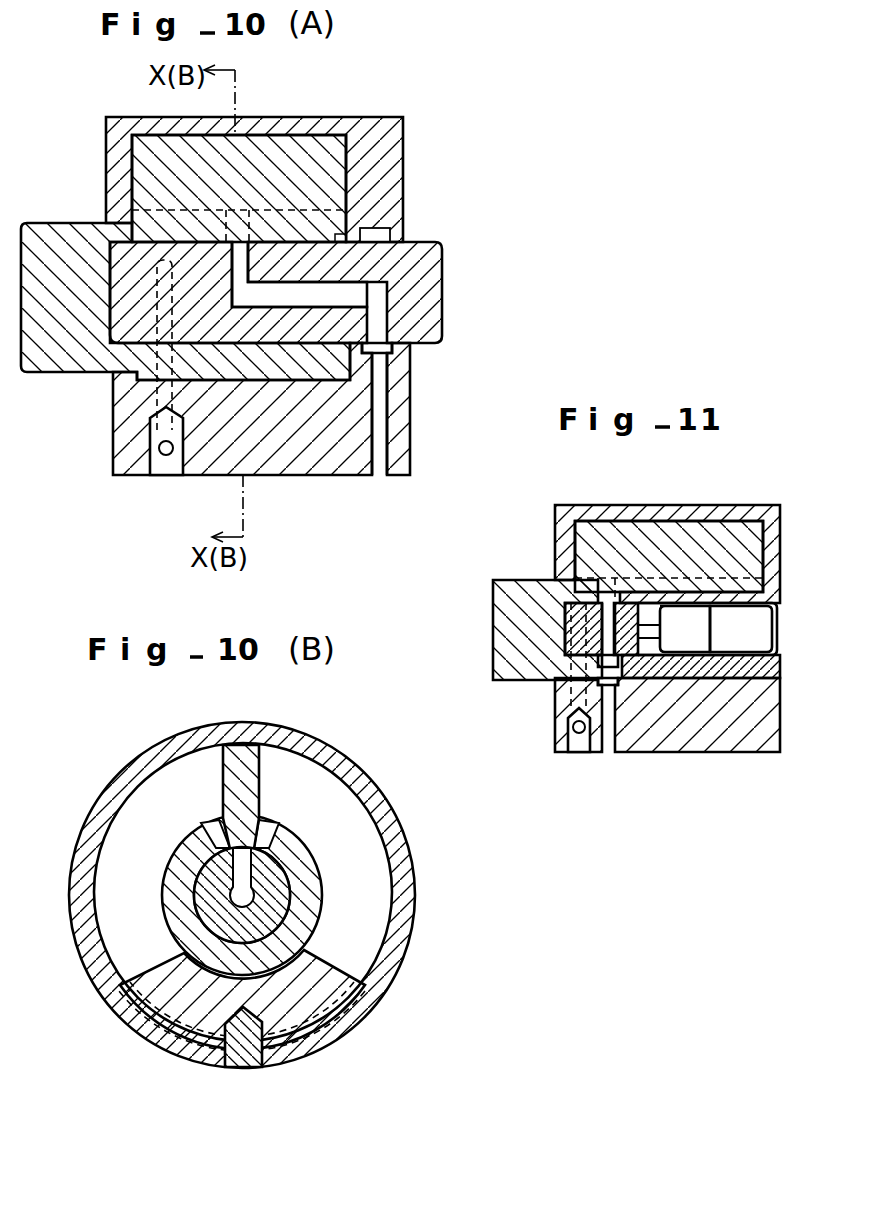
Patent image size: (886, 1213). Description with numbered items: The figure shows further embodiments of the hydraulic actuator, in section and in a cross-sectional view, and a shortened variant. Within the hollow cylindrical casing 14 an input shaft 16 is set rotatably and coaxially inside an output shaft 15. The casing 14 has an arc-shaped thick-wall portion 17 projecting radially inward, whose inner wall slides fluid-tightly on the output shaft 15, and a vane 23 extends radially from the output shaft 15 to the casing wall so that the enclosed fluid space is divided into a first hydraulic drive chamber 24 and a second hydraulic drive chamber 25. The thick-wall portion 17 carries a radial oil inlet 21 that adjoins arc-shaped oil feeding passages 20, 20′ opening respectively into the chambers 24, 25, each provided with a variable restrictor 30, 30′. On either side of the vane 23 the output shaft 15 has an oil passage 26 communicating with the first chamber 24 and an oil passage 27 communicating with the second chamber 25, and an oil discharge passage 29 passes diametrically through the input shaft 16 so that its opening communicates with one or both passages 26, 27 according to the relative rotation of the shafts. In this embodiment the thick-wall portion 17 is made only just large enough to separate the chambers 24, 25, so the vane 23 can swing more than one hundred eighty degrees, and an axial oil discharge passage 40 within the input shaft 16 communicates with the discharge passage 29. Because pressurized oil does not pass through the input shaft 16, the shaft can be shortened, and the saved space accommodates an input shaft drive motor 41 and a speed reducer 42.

In FIG. 10B, the casing 14 is at (150, 762).
In FIG. 11, the casing 14 is at (700, 512).
In FIG. 10A, the output shaft 15 is at (58, 243).
In FIG. 10B, the output shaft 15 is at (305, 920).
In FIG. 11, the output shaft 15 is at (525, 592).
In FIG. 10A, the input shaft 16 is at (432, 297).
In FIG. 10B, the input shaft 16 is at (207, 888).
In FIG. 11, the input shaft 16 is at (590, 628).
In FIG. 10A, the thick-wall portion 17 is at (290, 440).
In FIG. 10B, the thick-wall portion 17 is at (175, 970).
In FIG. 10B, the oil feeding passage 20 is at (357, 1005).
In FIG. 10A, the oil feeding passage 20′ is at (155, 400).
In FIG. 10B, the oil feeding passage 20′ is at (207, 1048).
In FIG. 11, the oil feeding passage 20′ is at (570, 697).
In FIG. 10A, the oil inlet 21 is at (163, 470).
In FIG. 10B, the oil inlet 21 is at (248, 1068).
In FIG. 11, the oil inlet 21 is at (578, 740).
In FIG. 10A, the vane 23 is at (293, 155).
In FIG. 10B, the vane 23 is at (243, 760).
In FIG. 11, the vane 23 is at (593, 540).
In FIG. 10B, the first hydraulic drive chamber 24 is at (357, 826).
In FIG. 10B, the second hydraulic drive chamber 25 is at (128, 828).
In FIG. 10A, the oil passage 26 is at (222, 240).
In FIG. 10B, the oil passage 26 is at (268, 830).
In FIG. 11, the oil passage 26 is at (616, 592).
In FIG. 10B, the oil passage 27 is at (210, 830).
In FIG. 10A, the oil discharge passage 29 is at (230, 277).
In FIG. 10B, the oil discharge passage 29 is at (243, 872).
In FIG. 10B, the variable restrictor 30 is at (295, 1012).
In FIG. 10B, the variable restrictor 30′ is at (172, 1022).
In FIG. 10A, the oil discharge passage 40 is at (380, 445).
In FIG. 11, the oil discharge passage 40 is at (607, 748).
In FIG. 11, the input shaft drive motor 41 is at (740, 635).
In FIG. 11, the speed reducer 42 is at (685, 632).